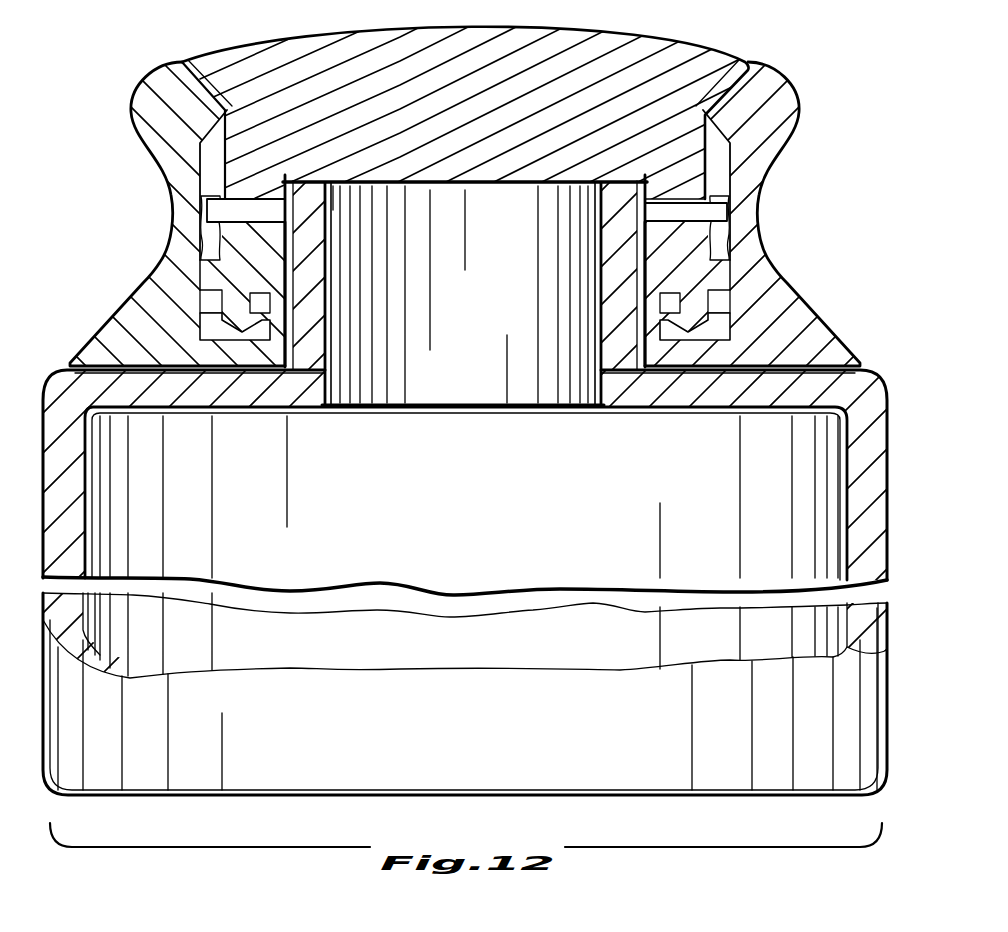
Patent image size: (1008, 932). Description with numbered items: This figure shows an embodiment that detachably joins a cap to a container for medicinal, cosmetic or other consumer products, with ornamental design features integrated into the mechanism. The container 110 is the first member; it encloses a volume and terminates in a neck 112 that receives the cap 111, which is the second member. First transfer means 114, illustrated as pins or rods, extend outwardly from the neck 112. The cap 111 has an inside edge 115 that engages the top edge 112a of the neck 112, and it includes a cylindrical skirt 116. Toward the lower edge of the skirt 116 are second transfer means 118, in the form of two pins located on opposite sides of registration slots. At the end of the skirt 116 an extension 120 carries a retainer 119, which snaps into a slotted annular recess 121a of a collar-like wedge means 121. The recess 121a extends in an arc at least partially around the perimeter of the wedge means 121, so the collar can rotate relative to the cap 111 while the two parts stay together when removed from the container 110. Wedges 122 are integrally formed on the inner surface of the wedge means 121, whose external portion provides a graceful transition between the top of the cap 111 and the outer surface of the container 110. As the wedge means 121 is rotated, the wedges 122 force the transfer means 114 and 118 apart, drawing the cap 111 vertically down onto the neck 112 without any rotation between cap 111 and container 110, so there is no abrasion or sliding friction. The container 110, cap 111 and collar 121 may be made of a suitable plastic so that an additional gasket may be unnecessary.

The container 110 is at (485, 508).
The cap 111 is at (442, 50).
The neck 112 is at (320, 327).
The top edge of neck 112a is at (338, 183).
The first transfer means 114 is at (200, 203).
The inside edge 115 is at (484, 172).
The cylindrical skirt 116 is at (630, 268).
The second transfer means 118 is at (213, 280).
The retainer 119 is at (717, 337).
The extension 120 is at (733, 297).
The wedge means 121 is at (770, 137).
The slotted annular recess 121a is at (200, 323).
The wedges 122 is at (213, 240).